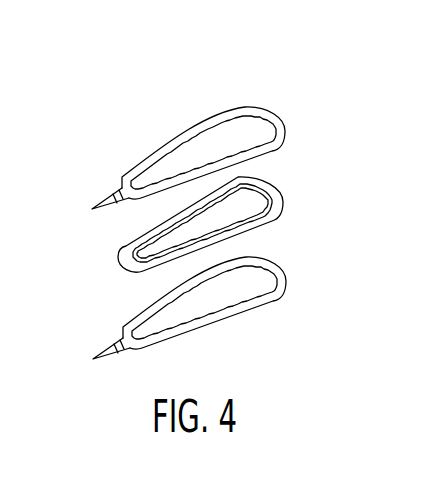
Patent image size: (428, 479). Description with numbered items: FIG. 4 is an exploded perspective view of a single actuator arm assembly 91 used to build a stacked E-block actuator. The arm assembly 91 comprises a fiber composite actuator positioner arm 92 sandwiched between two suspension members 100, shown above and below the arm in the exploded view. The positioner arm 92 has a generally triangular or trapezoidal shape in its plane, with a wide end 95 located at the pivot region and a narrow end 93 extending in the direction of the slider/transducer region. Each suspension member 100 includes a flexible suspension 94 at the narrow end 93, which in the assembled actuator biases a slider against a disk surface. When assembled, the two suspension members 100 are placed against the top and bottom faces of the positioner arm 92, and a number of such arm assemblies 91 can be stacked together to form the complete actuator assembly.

The actuator arm assembly 91 is at (72, 200).
The fiber composite actuator positioner arm 92 is at (279, 187).
The narrow end 93 is at (118, 260).
The flexible suspension 94 is at (106, 197).
The wide end 95 is at (281, 205).
The suspension member 100 is at (233, 107).